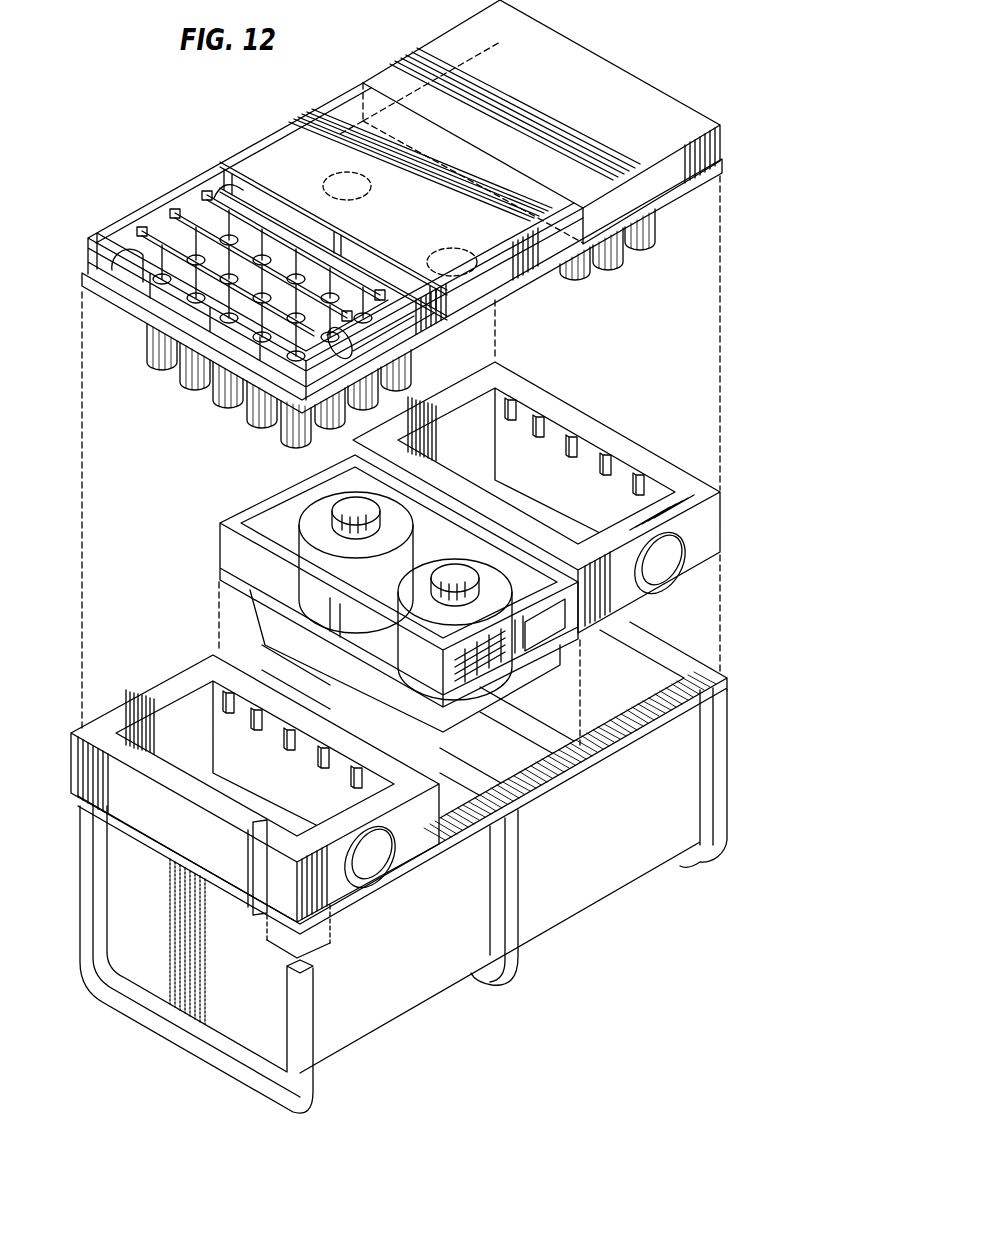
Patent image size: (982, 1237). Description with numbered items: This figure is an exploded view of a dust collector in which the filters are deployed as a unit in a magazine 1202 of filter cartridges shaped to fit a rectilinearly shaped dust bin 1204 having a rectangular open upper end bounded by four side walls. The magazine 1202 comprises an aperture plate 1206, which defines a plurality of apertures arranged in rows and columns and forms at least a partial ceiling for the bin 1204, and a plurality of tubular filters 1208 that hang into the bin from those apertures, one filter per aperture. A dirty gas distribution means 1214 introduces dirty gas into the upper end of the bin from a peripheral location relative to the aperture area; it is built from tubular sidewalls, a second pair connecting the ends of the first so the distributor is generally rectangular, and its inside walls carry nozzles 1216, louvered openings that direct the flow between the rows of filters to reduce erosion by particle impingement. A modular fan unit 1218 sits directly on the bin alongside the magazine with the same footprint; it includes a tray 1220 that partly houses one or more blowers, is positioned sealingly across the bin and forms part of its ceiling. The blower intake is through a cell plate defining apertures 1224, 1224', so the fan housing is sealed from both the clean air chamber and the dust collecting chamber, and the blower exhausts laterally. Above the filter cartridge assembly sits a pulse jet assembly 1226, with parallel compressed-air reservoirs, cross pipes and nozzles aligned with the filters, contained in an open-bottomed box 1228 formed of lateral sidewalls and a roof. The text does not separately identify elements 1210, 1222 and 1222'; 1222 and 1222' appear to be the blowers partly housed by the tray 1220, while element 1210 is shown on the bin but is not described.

The magazine 1202 is at (106, 322).
The dust bin 1204 is at (661, 824).
The aperture plate 1206 is at (268, 357).
The filters 1208 is at (282, 432).
The lower tray 1210 is at (188, 740).
The dirty gas distribution means 1214 is at (396, 878).
The nozzles 1216 is at (573, 430).
The modular fan unit 1218 is at (240, 498).
The tray 1220 is at (537, 660).
The blower 1222 is at (478, 624).
The blower 1222' is at (380, 548).
The aperture 1224 is at (471, 246).
The aperture 1224' is at (381, 198).
The pulse jet assembly 1226 is at (157, 216).
The open-bottomed box 1228 is at (627, 92).